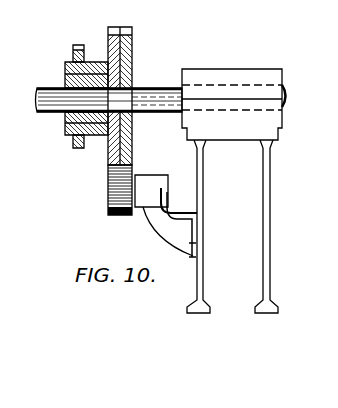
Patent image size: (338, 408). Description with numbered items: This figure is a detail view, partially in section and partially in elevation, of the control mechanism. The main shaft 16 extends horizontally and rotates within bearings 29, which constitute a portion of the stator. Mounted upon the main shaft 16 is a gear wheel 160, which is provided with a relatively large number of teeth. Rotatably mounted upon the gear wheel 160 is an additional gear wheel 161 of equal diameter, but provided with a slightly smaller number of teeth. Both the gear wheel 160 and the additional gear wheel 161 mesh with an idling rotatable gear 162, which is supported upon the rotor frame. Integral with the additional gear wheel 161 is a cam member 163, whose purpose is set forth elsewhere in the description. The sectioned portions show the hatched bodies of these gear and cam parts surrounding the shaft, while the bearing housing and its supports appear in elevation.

The main shaft 16 is at (62, 113).
The bearings 29 is at (268, 77).
The gear wheel 160 is at (133, 55).
The additional gear wheel 161 is at (110, 160).
The idling rotatable gear 162 is at (110, 203).
The cam member 163 is at (73, 56).